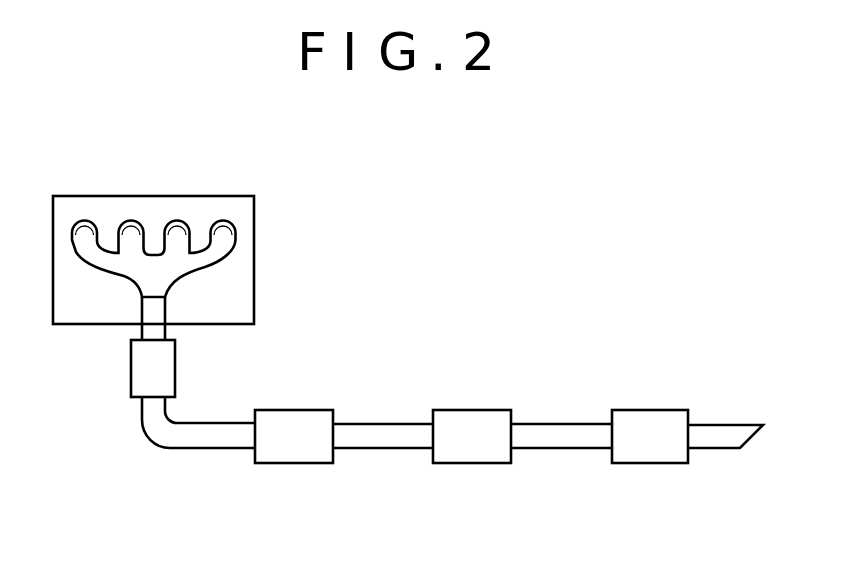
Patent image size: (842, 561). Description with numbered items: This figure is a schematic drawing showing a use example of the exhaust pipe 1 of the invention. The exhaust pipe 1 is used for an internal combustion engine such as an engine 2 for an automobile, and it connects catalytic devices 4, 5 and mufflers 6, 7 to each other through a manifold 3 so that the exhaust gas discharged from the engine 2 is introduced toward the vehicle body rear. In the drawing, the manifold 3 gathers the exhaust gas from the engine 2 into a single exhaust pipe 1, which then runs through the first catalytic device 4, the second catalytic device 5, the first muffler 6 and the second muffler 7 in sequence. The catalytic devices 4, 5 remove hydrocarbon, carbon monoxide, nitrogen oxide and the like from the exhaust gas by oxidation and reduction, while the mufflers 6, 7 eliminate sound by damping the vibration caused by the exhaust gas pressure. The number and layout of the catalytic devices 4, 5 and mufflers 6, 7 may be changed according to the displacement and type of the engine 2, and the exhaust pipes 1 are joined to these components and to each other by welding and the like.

The exhaust pipe 1 is at (142, 312).
The engine 2 is at (227, 195).
The manifold 3 is at (213, 265).
The catalytic device 4 is at (131, 387).
The catalytic device 5 is at (295, 463).
The muffler 6 is at (470, 463).
The muffler 7 is at (652, 463).